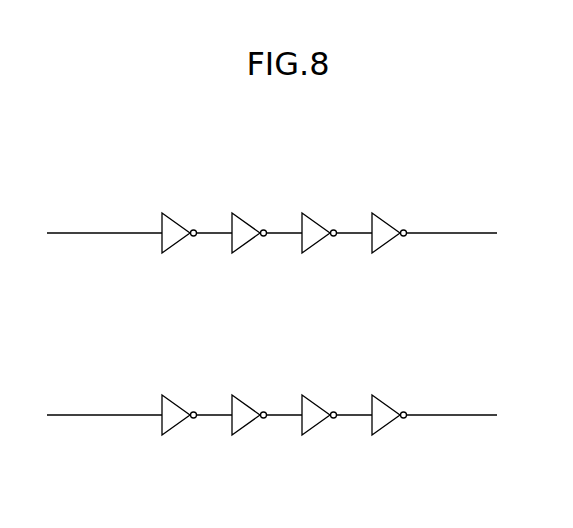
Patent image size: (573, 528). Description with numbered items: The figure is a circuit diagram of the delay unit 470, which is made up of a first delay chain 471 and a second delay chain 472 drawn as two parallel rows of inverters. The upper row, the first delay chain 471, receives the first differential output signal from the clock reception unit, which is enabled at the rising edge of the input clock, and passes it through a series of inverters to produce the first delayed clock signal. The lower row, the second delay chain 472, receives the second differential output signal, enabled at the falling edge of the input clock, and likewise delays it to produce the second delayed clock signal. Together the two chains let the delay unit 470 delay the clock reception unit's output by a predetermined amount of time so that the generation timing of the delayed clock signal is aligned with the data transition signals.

The delay unit 470 is at (137, 144).
The first delay chain 471 is at (188, 258).
The second delay chain 472 is at (188, 442).